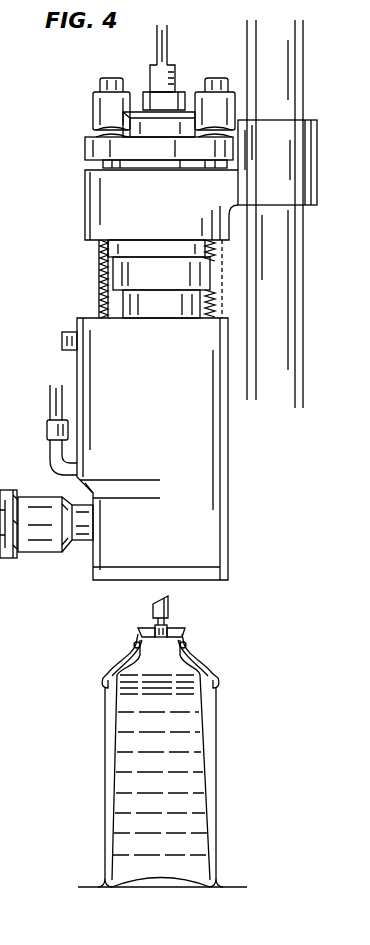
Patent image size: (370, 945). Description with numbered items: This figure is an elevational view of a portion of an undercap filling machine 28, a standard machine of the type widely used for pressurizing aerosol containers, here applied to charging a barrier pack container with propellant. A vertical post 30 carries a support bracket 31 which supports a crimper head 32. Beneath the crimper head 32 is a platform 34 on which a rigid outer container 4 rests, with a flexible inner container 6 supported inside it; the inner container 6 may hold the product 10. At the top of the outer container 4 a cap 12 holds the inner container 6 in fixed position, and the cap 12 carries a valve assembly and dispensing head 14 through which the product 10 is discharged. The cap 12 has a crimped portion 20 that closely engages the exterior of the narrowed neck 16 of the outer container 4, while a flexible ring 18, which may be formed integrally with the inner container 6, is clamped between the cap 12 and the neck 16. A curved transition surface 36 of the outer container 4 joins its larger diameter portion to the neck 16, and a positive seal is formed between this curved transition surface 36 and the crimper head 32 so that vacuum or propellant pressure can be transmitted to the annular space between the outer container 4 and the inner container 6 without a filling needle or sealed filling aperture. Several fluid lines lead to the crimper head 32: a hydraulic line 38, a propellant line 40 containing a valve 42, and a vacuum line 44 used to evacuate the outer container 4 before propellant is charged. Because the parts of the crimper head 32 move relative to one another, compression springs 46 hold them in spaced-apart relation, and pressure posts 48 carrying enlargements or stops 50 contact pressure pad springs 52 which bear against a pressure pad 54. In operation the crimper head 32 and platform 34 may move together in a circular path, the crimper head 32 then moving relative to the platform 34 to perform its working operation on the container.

The rigid outer container 4 is at (164, 761).
The flexible inner container 6 is at (204, 712).
The product 10 is at (165, 797).
The cap 12 is at (156, 619).
The valve assembly and dispensing head 14 is at (152, 604).
The neck 16 is at (134, 645).
The flexible ring 18 is at (185, 640).
The crimped portion 20 is at (138, 630).
The undercap filling machine 28 is at (308, 224).
The post 30 is at (304, 250).
The support bracket 31 is at (318, 150).
The crimper head 32 is at (73, 370).
The platform 34 is at (228, 887).
The curved transition surface 36 is at (204, 662).
The hydraulic line 38 is at (168, 56).
The propellant line 40 is at (78, 545).
The valve 42 is at (30, 497).
The vacuum line 44 is at (50, 400).
The compression springs 46 is at (98, 268).
The pressure posts 48 is at (98, 85).
The stops 50 is at (97, 107).
The pressure pad springs 52 is at (92, 136).
The pressure pad 54 is at (86, 153).